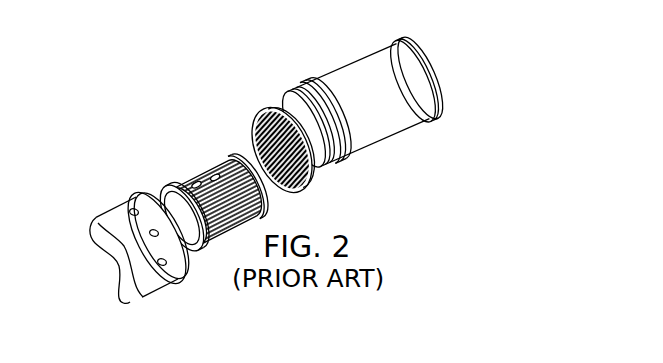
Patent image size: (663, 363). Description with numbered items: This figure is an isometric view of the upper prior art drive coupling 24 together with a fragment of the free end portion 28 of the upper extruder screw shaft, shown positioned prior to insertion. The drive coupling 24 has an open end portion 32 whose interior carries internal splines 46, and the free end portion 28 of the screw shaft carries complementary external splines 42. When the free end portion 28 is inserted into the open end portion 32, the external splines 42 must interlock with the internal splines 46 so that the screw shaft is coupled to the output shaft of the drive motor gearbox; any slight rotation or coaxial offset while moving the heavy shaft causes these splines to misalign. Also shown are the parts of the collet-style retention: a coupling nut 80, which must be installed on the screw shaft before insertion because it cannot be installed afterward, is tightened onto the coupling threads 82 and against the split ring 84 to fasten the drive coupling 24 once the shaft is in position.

The drive coupling 24 is at (374, 51).
The free end portion 28 is at (206, 163).
The open end portion 32 is at (301, 190).
The external splines 42 is at (190, 153).
The internal splines 46 is at (252, 115).
The coupling nut 80 is at (117, 210).
The coupling threads 82 is at (289, 95).
The split ring 84 is at (169, 191).